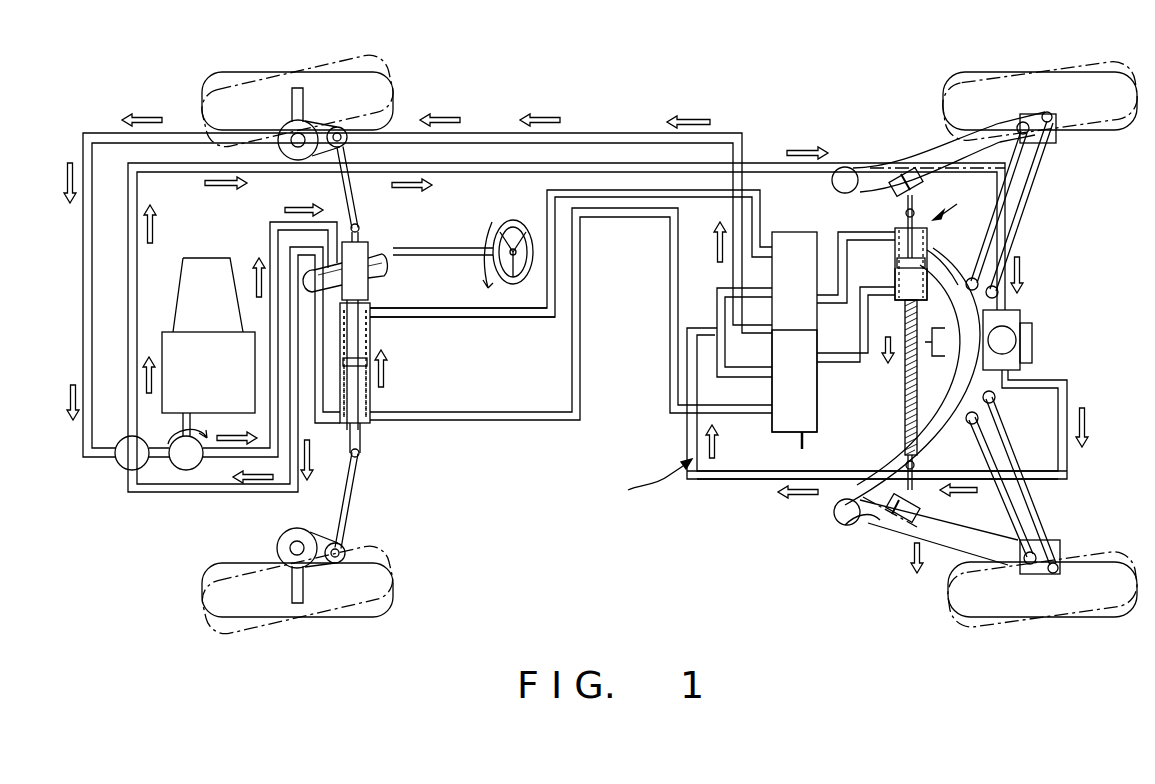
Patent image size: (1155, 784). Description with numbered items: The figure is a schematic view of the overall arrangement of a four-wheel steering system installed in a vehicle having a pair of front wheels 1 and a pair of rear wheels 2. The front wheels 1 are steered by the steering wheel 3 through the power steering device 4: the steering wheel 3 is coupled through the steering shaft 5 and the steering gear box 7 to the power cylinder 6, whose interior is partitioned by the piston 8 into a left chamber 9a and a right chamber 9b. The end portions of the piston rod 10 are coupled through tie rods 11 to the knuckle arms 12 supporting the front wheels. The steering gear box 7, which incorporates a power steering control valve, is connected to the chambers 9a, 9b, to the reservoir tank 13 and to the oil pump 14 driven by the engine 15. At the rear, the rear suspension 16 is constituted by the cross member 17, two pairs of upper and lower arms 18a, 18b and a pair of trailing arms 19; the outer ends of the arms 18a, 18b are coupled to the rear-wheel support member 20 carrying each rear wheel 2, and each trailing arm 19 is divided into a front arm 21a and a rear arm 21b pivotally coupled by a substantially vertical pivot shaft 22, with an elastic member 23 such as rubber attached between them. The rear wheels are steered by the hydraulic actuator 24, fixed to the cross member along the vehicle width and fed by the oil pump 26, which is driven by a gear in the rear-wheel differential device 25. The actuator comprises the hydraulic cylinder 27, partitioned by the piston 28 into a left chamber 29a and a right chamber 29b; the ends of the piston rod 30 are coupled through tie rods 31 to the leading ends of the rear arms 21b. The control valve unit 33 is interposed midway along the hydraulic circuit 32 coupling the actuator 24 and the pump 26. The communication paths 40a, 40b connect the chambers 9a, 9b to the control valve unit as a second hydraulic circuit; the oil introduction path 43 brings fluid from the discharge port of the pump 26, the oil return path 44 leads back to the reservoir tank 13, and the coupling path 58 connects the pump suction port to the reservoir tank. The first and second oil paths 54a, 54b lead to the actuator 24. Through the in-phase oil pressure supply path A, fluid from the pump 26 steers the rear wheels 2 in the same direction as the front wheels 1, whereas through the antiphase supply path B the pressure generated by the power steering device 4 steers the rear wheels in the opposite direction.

The front wheels 1 is at (248, 72).
The rear wheels 2 is at (970, 74).
The steering wheel 3 is at (507, 222).
The power steering device 4 is at (384, 244).
The steering shaft 5 is at (446, 246).
The power cylinder 6 is at (372, 400).
The steering gear box 7 is at (372, 277).
The piston 8 is at (366, 358).
The left chamber 9a is at (370, 392).
The right chamber 9b is at (368, 325).
The piston rod 10 is at (358, 443).
The tie rods 11 is at (349, 193).
The knuckle arms 12 is at (300, 88).
The reservoir tank 13 is at (125, 463).
The oil pump 14 is at (188, 470).
The engine 15 is at (162, 334).
The rear suspension 16 is at (878, 532).
The cross member 17 is at (947, 426).
The upper arm 18a is at (1026, 168).
The lower arm 18b is at (1033, 192).
The trailing arm 19 is at (942, 145).
The rear-wheel support member 20 is at (1040, 112).
The front arm 21a is at (860, 140).
The rear arm 21b is at (940, 152).
The pivot shaft 22 is at (905, 165).
The elastic member 23 is at (892, 172).
The hydraulic actuator 24 is at (961, 204).
The rear-wheel differential device 25 is at (1022, 315).
The oil pump 26 is at (1034, 340).
The hydraulic cylinder 27 is at (932, 296).
The piston 28 is at (927, 262).
The left chamber 29a is at (897, 282).
The right chamber 29b is at (926, 235).
The piston rod 30 is at (906, 402).
The tie rods 31 is at (915, 206).
The hydraulic circuit 32 is at (648, 481).
The control valve unit 33 is at (803, 446).
The communication path 40a is at (538, 312).
The communication path 40b is at (542, 421).
The oil introduction path 43 is at (763, 481).
The oil return path 44 is at (618, 133).
The first oil path 54a is at (818, 385).
The second oil path 54b is at (820, 215).
The coupling path 58 is at (767, 164).
The oil pressure supply path for in-phase steering A is at (688, 481).
The oil pressure supply path for antiphase steering B is at (629, 200).